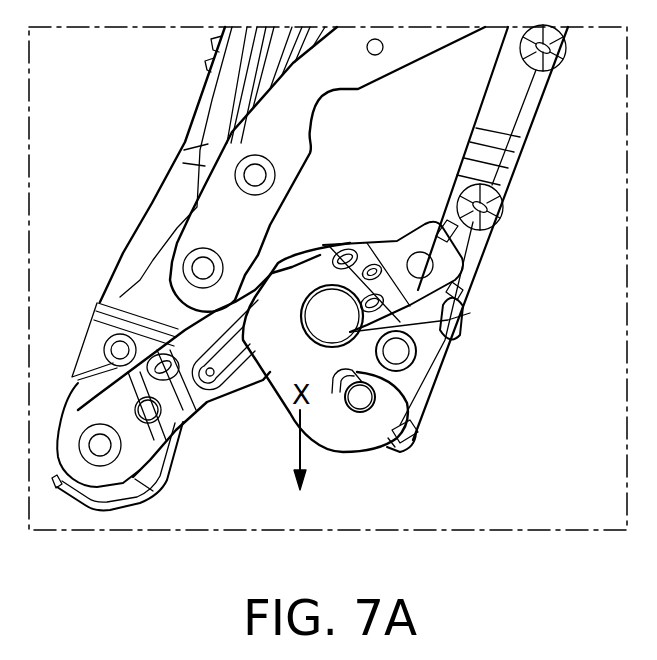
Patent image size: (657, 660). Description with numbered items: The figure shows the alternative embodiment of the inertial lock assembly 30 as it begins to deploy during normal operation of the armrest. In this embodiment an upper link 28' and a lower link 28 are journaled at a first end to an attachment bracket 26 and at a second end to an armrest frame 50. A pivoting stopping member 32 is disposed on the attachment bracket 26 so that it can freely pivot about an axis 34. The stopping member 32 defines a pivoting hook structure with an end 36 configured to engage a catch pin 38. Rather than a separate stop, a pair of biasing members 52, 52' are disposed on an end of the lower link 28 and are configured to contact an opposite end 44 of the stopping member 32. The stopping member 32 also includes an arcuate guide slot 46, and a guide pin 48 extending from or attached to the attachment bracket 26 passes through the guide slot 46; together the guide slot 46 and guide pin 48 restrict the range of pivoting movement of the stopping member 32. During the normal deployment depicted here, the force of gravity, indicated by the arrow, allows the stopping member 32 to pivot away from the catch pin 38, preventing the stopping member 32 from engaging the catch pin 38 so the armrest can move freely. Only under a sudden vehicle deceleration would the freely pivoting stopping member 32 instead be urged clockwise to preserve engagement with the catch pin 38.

The attachment bracket 26 is at (523, 122).
The lower link 28 is at (186, 382).
The upper link 28' is at (327, 169).
The inertial lock assembly 30 is at (402, 472).
The stopping member 32 is at (297, 353).
The axis 34 is at (405, 352).
The end 36 is at (308, 262).
The catch pin 38 is at (333, 305).
The end 44 is at (455, 317).
The arcuate guide slot 46 is at (410, 405).
The guide pin 48 is at (360, 402).
The armrest frame 50 is at (217, 87).
The biasing member 52 is at (430, 196).
The biasing member 52' is at (498, 267).